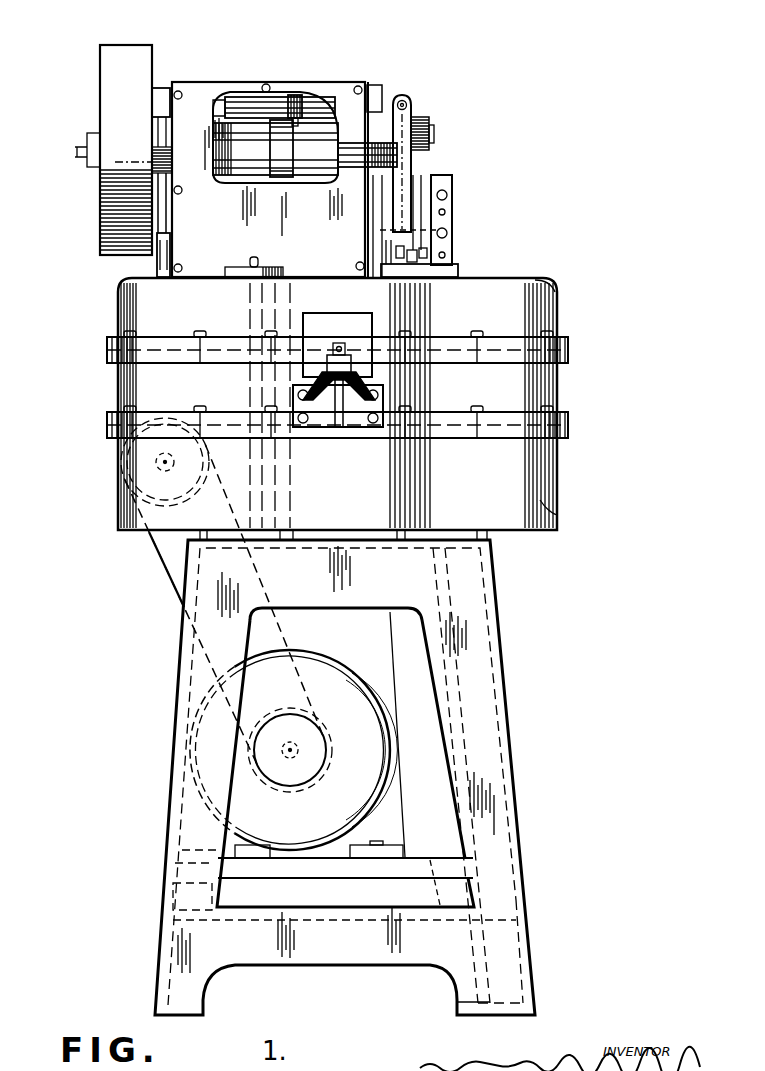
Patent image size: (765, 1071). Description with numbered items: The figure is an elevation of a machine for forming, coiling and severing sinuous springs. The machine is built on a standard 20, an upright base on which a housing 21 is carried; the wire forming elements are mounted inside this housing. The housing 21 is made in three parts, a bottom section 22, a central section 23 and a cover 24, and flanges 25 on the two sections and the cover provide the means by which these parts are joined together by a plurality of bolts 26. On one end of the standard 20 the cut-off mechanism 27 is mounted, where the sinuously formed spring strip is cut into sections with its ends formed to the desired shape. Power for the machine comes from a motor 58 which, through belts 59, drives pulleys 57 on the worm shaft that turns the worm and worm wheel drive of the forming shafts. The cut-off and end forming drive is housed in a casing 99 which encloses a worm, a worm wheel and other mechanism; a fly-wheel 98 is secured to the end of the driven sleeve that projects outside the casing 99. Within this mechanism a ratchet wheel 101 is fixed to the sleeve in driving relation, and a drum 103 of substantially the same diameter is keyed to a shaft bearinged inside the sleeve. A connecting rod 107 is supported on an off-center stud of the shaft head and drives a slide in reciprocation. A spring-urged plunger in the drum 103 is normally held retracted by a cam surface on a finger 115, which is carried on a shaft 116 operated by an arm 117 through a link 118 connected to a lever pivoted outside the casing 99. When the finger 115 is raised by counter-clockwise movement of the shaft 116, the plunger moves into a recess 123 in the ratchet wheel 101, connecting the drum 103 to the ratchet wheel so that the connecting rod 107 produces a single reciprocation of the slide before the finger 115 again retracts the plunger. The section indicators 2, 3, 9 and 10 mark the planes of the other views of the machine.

The section line 2- 2 is at (42, 212).
The section line 3- 3 is at (106, 351).
The section line 9- 9 is at (55, 125).
The section line 10- 10 is at (640, 108).
The standard 20 is at (476, 608).
The housing 21 is at (522, 472).
The bottom section 22 is at (548, 508).
The central section 23 is at (557, 404).
The cover 24 is at (553, 278).
The flanges 25 is at (570, 333).
The bolts 26 is at (477, 330).
The cut-off mechanism 27 is at (427, 251).
The pulleys 57 is at (140, 468).
The motor 58 is at (330, 660).
The belts 59 is at (283, 632).
The fly-wheel 98 is at (130, 246).
The casing 99 is at (236, 82).
The ratchet wheel 101 is at (278, 173).
The drum 103 is at (310, 174).
The connecting rod 107 is at (407, 164).
The finger 115 is at (312, 98).
The shaft 116 is at (278, 100).
The arm 117 is at (162, 88).
The link 118 is at (163, 213).
The recess 123 is at (288, 178).